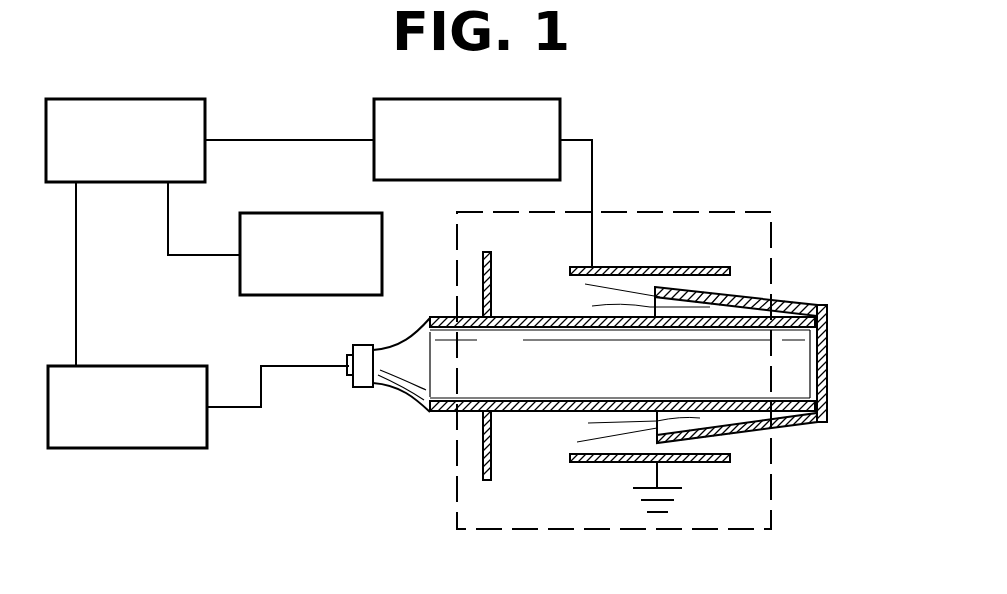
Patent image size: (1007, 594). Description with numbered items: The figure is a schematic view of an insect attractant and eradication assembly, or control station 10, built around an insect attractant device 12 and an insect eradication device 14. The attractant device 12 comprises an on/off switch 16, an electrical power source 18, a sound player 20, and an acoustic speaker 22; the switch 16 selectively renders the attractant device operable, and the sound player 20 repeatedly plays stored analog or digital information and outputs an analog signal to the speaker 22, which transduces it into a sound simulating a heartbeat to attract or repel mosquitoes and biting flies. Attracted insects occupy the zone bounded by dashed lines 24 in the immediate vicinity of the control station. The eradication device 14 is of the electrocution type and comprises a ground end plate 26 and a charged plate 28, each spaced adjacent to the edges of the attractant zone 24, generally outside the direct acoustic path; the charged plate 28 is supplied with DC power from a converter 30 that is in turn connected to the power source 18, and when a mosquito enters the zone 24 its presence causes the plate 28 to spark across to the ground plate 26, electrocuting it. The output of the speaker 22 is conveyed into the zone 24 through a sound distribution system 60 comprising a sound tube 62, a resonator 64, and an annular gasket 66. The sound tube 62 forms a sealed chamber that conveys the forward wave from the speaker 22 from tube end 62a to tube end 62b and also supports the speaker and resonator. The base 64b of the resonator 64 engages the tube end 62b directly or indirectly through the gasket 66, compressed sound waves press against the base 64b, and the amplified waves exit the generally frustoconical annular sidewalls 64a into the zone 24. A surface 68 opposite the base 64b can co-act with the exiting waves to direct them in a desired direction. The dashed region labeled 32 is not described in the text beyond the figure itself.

The control station 10 is at (625, 356).
The insect attractant device 12 is at (239, 413).
The insect eradication device 14 is at (582, 466).
The on/off switch 16 is at (248, 279).
The electrical power source 18 is at (100, 103).
The sound player 20 is at (157, 438).
The acoustic speaker 22 is at (363, 345).
The attractant zone 24 is at (745, 535).
The ground end plate 26 is at (713, 463).
The charged plate 28 is at (668, 268).
The converter 30 is at (374, 123).
The discharge chamber 32 is at (682, 354).
The sound distribution system 60 is at (775, 362).
The sound tube 62 is at (585, 358).
The tube end 62a is at (433, 370).
The tube end 62b is at (810, 364).
The resonator 64 is at (856, 357).
The annular sidewalls 64a is at (817, 308).
The base 64b is at (828, 345).
The annular gasket 66 is at (820, 333).
The surface 68 is at (490, 285).